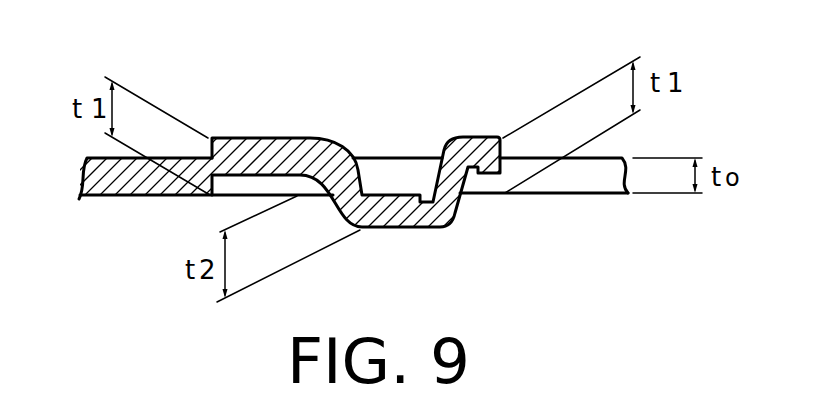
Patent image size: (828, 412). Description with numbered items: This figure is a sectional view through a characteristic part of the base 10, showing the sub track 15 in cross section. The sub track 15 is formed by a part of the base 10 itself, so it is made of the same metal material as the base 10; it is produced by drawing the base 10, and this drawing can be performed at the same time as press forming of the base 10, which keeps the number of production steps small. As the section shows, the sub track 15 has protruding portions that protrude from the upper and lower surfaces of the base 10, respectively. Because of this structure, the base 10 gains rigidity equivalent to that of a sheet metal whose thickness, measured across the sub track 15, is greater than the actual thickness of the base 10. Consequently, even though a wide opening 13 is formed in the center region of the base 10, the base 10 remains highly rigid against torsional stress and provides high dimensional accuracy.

The base 10 is at (124, 190).
The opening 13 is at (561, 217).
The sub track 15 is at (397, 112).